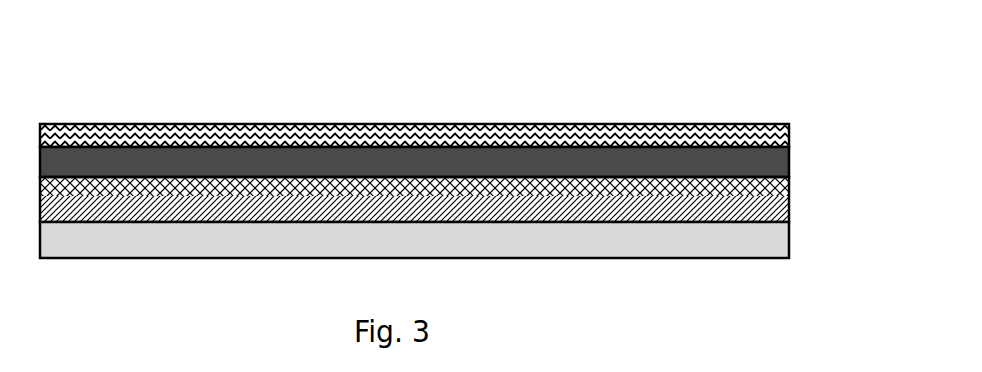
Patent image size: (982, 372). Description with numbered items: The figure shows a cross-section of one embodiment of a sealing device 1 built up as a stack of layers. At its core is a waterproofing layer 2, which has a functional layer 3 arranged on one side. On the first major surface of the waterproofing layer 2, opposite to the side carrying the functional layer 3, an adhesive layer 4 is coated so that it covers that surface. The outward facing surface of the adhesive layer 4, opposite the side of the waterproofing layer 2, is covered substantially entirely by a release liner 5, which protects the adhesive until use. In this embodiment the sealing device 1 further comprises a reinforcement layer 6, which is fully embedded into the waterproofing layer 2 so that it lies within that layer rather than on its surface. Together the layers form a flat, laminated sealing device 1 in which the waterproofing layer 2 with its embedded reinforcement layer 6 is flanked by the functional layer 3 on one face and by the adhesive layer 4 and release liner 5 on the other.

The sealing device 1 is at (463, 153).
The waterproofing layer 2 is at (789, 213).
The functional layer 3 is at (789, 240).
The adhesive layer 4 is at (789, 162).
The release liner 5 is at (789, 138).
The reinforcement layer 6 is at (789, 197).